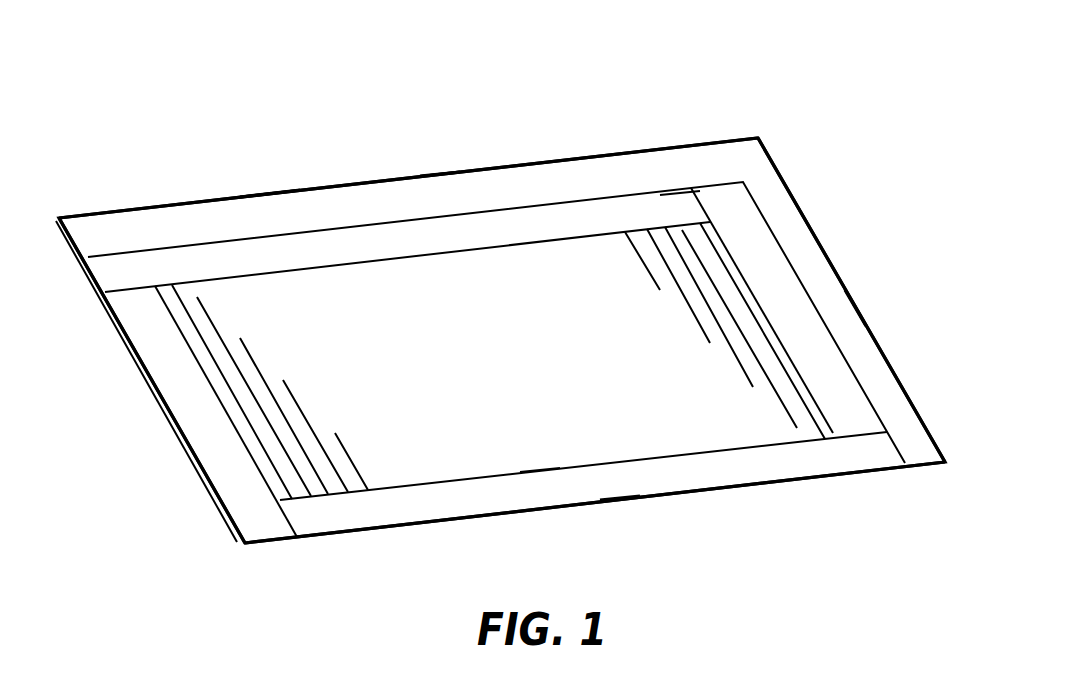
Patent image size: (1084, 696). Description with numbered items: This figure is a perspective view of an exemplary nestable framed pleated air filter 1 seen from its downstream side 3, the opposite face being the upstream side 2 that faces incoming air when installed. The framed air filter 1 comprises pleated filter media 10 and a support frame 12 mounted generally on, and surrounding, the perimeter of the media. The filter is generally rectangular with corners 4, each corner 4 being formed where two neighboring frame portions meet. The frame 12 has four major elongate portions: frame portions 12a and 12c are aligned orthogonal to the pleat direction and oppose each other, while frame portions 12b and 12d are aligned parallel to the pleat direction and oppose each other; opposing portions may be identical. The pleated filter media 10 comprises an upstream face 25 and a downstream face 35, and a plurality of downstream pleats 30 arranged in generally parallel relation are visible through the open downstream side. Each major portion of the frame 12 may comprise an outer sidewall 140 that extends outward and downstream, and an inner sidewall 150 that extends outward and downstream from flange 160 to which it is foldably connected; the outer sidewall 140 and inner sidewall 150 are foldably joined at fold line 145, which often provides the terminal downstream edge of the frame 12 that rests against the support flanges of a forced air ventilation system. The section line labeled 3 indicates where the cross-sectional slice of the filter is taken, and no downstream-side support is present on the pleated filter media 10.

The framed air filter 1 is at (263, 57).
The upstream side 2 is at (781, 536).
The downstream side 3 is at (847, 166).
The corner 4 is at (59, 218).
The pleated filter media 10 is at (490, 363).
The support frame 12 is at (746, 131).
The frame portion 12a is at (203, 202).
The frame portion 12b is at (822, 247).
The frame portion 12c is at (478, 518).
The frame portion 12d is at (157, 392).
The upstream face 25 is at (617, 435).
The downstream pleats 30 is at (690, 307).
The downstream face 35 is at (537, 425).
The outer sidewall 140 is at (453, 193).
The fold line 145 is at (857, 307).
The inner sidewall 150 is at (275, 220).
The flange 160 is at (675, 200).